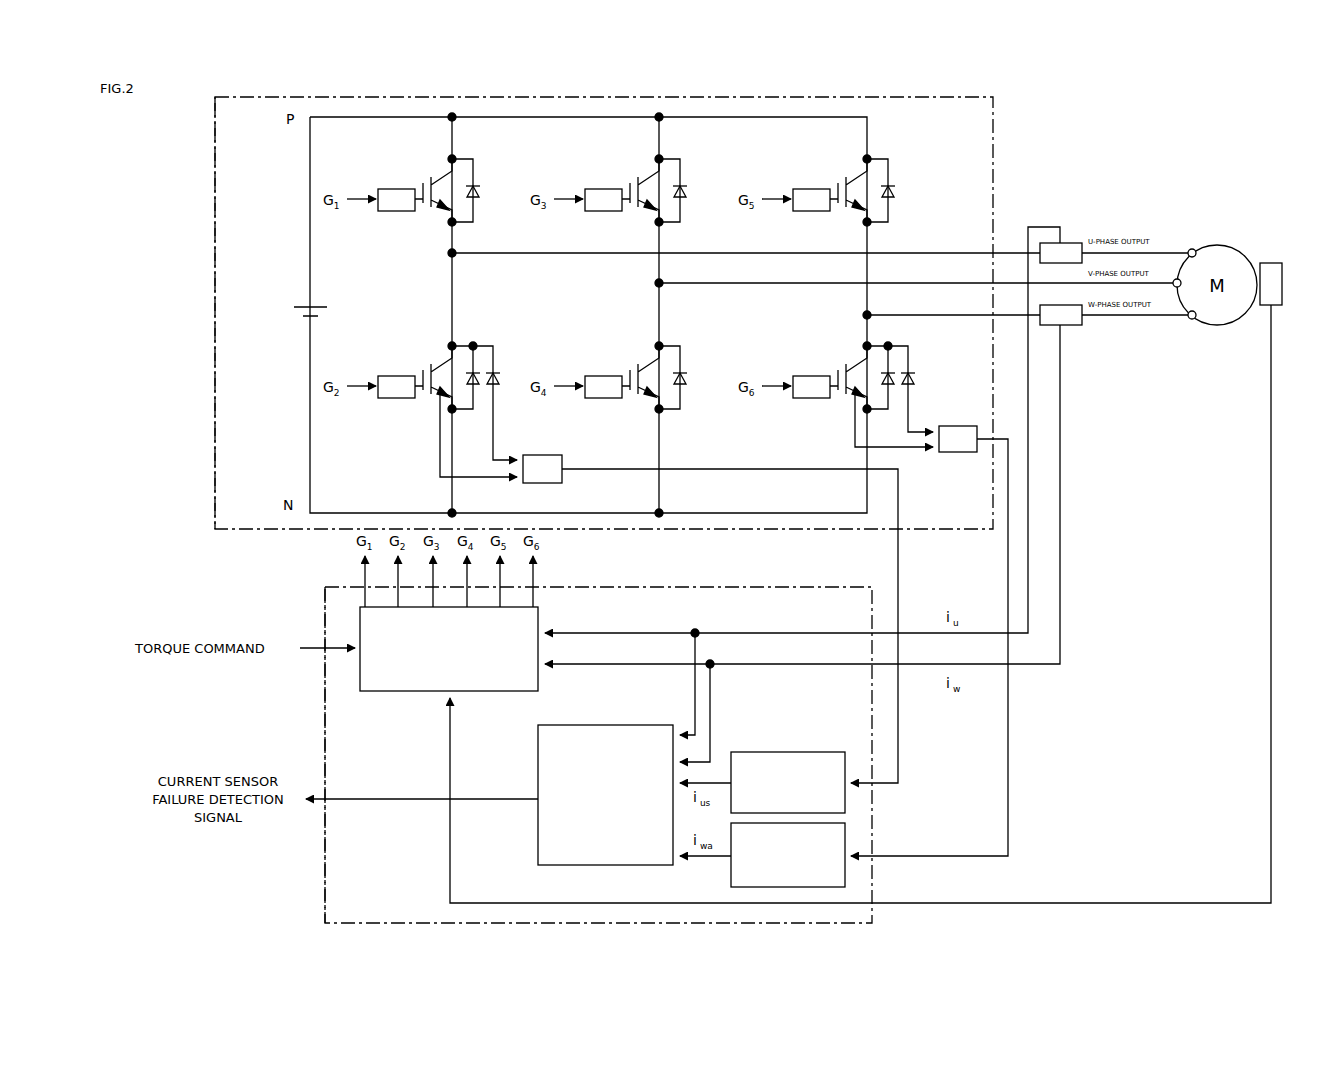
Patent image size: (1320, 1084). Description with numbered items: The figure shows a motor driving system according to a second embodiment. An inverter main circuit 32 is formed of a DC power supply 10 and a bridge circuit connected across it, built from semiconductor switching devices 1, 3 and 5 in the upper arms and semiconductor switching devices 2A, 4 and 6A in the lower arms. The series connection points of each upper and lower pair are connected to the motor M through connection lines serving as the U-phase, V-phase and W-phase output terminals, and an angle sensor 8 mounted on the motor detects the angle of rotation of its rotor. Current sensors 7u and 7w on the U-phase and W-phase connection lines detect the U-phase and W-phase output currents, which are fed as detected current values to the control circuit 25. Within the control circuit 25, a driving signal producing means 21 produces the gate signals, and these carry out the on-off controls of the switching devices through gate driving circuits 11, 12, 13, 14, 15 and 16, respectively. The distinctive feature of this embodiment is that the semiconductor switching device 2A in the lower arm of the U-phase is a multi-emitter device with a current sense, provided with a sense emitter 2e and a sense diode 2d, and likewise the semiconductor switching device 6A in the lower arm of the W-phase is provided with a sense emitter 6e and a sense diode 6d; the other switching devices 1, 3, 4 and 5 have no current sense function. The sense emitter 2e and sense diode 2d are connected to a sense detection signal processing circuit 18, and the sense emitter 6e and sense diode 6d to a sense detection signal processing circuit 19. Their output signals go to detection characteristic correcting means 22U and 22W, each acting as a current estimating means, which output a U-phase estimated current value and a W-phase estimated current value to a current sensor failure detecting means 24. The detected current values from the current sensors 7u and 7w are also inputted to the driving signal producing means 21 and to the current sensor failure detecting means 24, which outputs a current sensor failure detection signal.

The semiconductor switching device 1 is at (442, 168).
The semiconductor switching device 3 is at (650, 168).
The semiconductor switching device 5 is at (858, 168).
The semiconductor switching device 2A is at (443, 356).
The semiconductor switching device 4 is at (650, 353).
The semiconductor switching device 6A is at (858, 356).
The sense diode 2d is at (500, 372).
The sense diode 6d is at (920, 378).
The sense emitter 2e is at (436, 412).
The sense emitter 6e is at (848, 410).
The DC power supply 10 is at (298, 312).
The gate driving circuit 11 is at (398, 213).
The gate driving circuit 12 is at (395, 400).
The gate driving circuit 13 is at (606, 213).
The gate driving circuit 14 is at (605, 400).
The gate driving circuit 15 is at (814, 213).
The gate driving circuit 16 is at (805, 400).
The sense detection signal processing circuit 18 is at (546, 483).
The sense detection signal processing circuit 19 is at (958, 453).
The current sensor 7u is at (1072, 240).
The current sensor 7w is at (1072, 327).
The angle sensor 8 is at (1272, 262).
The driving signal producing means 21 is at (392, 692).
The detection characteristic correcting means 22U is at (787, 752).
The detection characteristic correcting means 22W is at (735, 876).
The current sensor failure detecting means 24 is at (599, 737).
The control circuit 25 is at (322, 900).
The inverter main circuit 32 is at (213, 140).